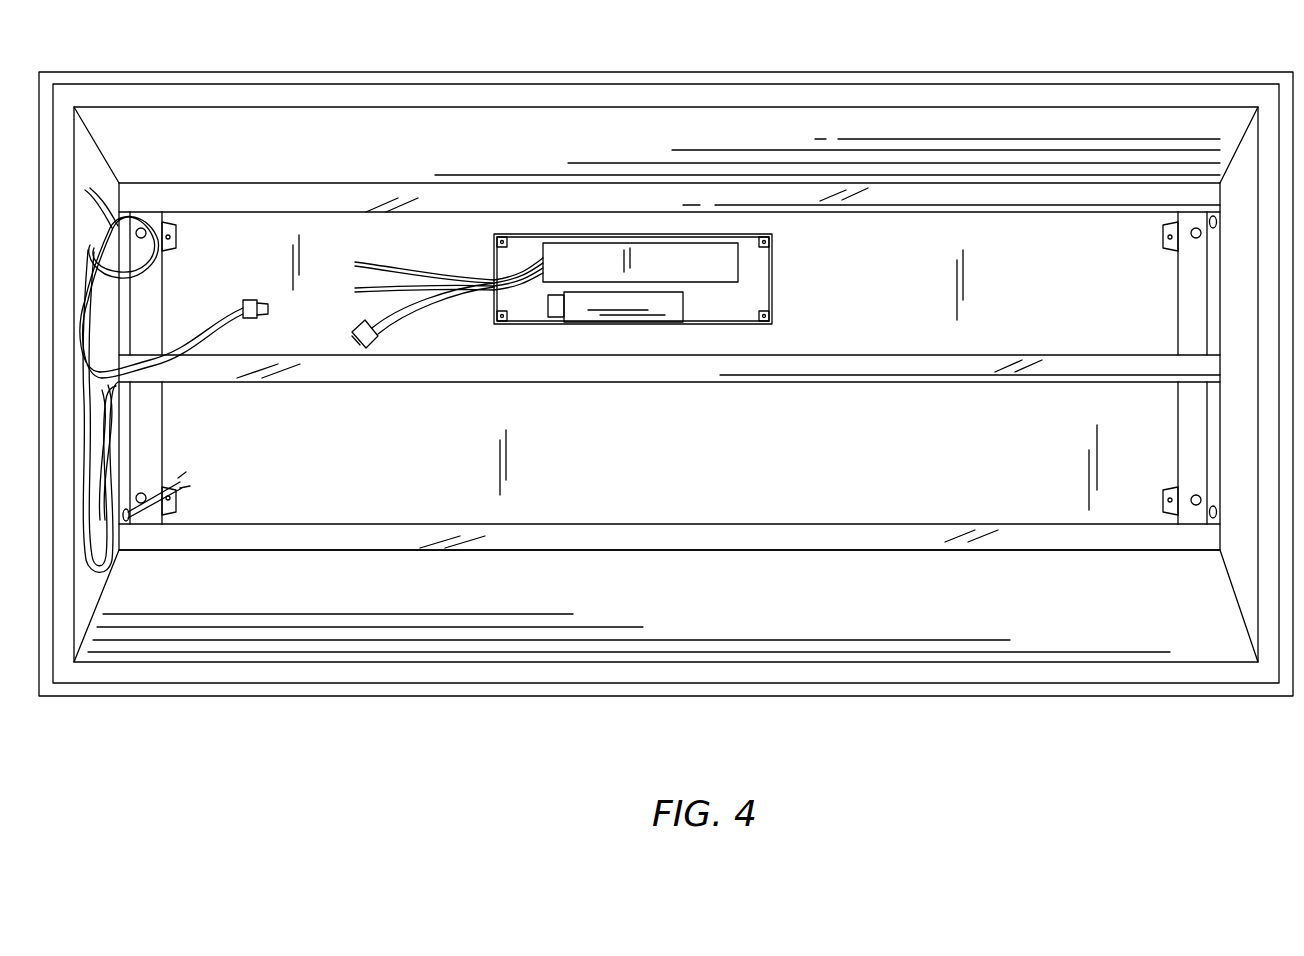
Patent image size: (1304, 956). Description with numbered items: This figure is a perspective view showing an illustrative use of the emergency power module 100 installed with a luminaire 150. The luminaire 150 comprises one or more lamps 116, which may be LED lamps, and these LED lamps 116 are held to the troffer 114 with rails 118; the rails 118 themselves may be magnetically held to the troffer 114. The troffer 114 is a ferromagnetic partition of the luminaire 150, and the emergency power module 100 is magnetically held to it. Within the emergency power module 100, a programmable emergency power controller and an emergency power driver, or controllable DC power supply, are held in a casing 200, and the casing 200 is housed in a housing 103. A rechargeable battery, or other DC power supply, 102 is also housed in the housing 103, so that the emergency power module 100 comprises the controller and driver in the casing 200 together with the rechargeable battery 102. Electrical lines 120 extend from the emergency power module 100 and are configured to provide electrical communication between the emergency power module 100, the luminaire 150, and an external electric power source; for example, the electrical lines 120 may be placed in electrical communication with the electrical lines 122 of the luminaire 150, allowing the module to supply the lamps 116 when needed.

The emergency power module 100 is at (805, 265).
The rechargeable battery 102 is at (682, 340).
The housing 103 is at (767, 322).
The troffer 114 is at (867, 480).
The lamps 116 is at (912, 367).
The rails 118 is at (130, 432).
The electrical lines 120 is at (450, 270).
The electrical lines 122 is at (238, 304).
The luminaire 150 is at (358, 695).
The casing 200 is at (692, 272).